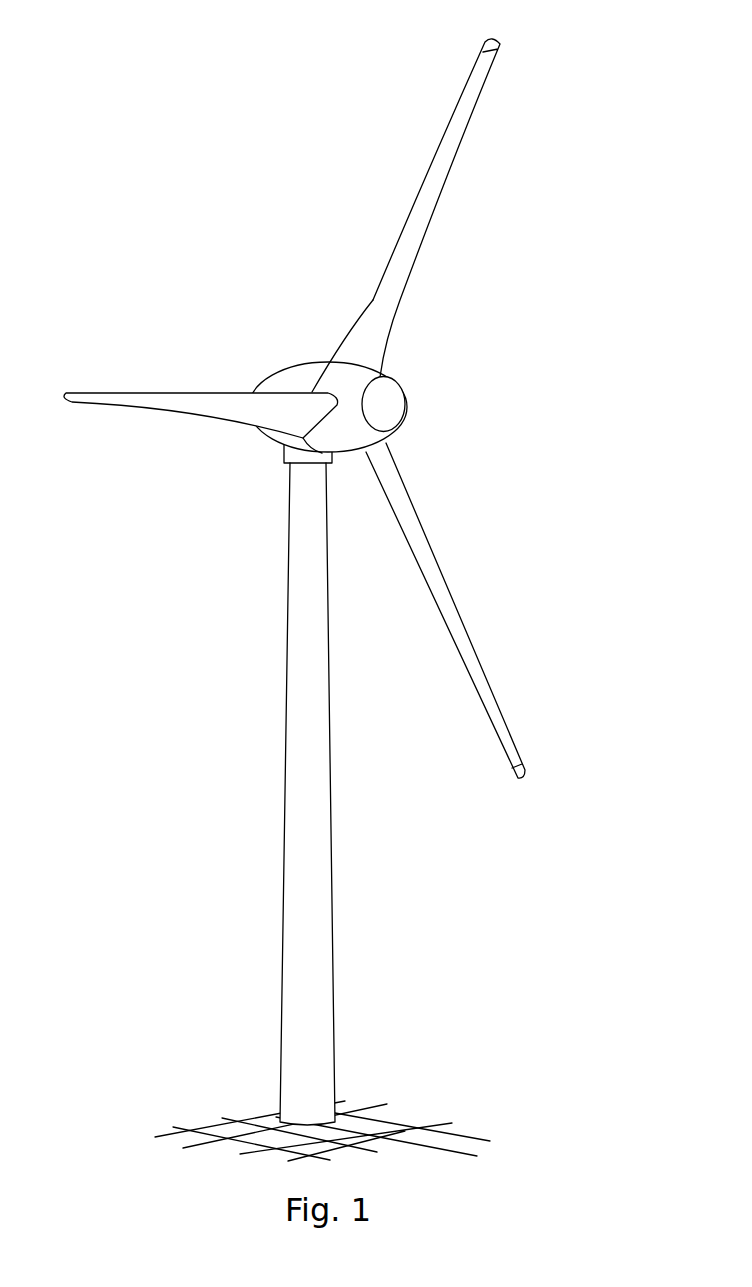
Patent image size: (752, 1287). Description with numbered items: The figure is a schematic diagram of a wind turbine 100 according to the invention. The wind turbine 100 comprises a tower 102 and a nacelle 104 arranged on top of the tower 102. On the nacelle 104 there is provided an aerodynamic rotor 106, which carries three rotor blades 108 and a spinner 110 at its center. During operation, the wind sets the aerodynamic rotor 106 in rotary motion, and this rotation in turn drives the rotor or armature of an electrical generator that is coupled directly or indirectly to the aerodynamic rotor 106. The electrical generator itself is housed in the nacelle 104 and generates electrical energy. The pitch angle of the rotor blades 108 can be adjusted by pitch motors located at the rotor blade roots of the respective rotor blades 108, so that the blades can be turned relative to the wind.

The wind turbine 100 is at (337, 600).
The tower 102 is at (320, 868).
The nacelle 104 is at (303, 378).
The aerodynamic rotor 106 is at (337, 408).
The rotor blades 108 is at (329, 408).
The spinner 110 is at (388, 403).